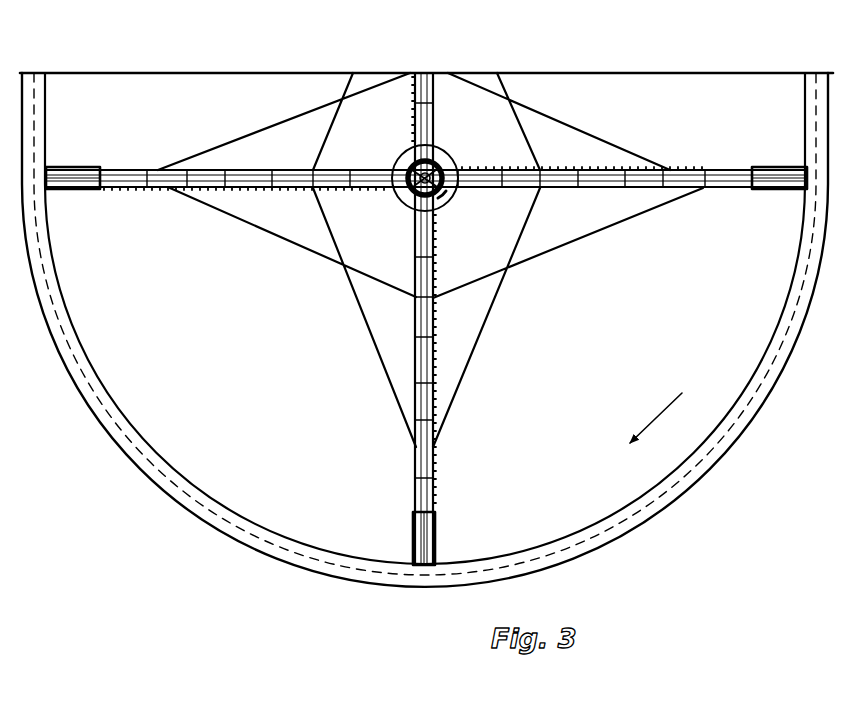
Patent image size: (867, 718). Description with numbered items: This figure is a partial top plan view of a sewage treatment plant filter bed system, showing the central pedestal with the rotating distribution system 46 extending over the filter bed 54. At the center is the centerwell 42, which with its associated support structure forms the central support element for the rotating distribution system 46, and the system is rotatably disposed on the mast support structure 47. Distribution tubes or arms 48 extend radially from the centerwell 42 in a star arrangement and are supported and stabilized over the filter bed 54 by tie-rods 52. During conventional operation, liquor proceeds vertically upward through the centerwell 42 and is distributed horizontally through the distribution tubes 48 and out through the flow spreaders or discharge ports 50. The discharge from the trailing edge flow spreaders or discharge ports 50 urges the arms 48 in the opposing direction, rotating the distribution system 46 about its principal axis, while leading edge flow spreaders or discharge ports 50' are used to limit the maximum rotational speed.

The centerwell 42 is at (443, 157).
The rotating distribution system 46 is at (578, 155).
The mast support structure 47 is at (455, 194).
The distribution tubes 48 is at (146, 189).
The flow spreaders or discharge ports 50 is at (426, 339).
The leading edge flow spreaders or discharge ports 50' is at (240, 339).
The tie-rods 52 is at (288, 242).
The filter bed 54 is at (278, 431).